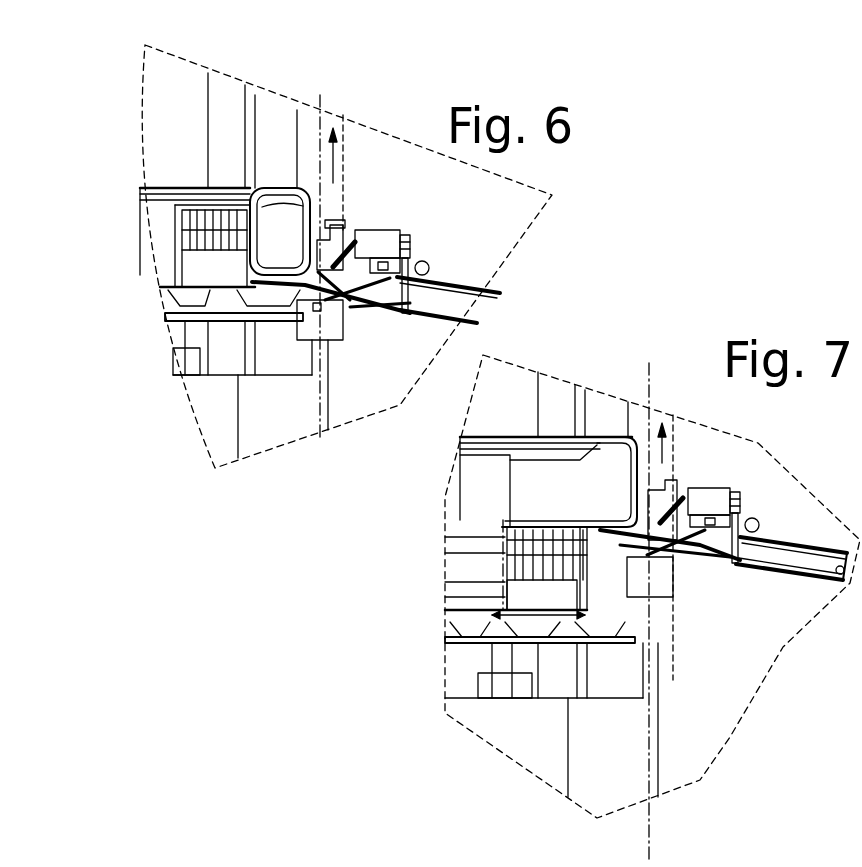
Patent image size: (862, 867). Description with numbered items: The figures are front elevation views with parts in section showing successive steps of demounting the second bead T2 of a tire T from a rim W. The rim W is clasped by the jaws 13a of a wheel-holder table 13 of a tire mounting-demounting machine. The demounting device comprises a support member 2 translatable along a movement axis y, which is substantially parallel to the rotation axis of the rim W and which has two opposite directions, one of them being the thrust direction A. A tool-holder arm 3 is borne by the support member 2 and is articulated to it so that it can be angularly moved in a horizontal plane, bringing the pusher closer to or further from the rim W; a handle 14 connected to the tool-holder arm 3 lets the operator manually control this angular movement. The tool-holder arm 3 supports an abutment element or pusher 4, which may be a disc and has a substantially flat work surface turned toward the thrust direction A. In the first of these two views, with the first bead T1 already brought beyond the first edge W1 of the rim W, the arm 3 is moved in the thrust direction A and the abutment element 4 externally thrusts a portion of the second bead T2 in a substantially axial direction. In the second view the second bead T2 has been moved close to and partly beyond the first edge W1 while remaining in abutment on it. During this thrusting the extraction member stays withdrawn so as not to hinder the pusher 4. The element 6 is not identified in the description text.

In FIG. 6, the support member 2 is at (297, 160).
In FIG. 7, the support member 2 is at (630, 437).
In FIG. 7, the tool-holder arm 3 is at (683, 485).
In FIG. 6, the abutment element 4 is at (355, 308).
In FIG. 7, the abutment element 4 is at (692, 563).
In FIG. 6, the guide shaft 6 is at (447, 320).
In FIG. 7, the guide shaft 6 is at (750, 573).
In FIG. 6, the wheel-holder table 13 is at (233, 317).
In FIG. 7, the wheel-holder table 13 is at (537, 615).
In FIG. 6, the jaws 13a is at (253, 303).
In FIG. 7, the jaws 13a is at (587, 627).
In FIG. 6, the handle 14 is at (429, 267).
In FIG. 7, the handle 14 is at (770, 515).
In FIG. 6, the rim W is at (198, 192).
In FIG. 7, the rim W is at (507, 572).
In FIG. 6, the first edge W1 is at (197, 255).
In FIG. 7, the first edge W1 is at (577, 530).
In FIG. 6, the tire T is at (243, 186).
In FIG. 6, the first bead T1 is at (305, 205).
In FIG. 6, the second bead T2 is at (248, 275).
In FIG. 7, the second bead T2 is at (510, 517).
In FIG. 6, the thrust direction A is at (354, 155).
In FIG. 7, the thrust direction A is at (683, 450).
In FIG. 6, the movement axis y is at (323, 262).
In FIG. 7, the movement axis y is at (654, 591).